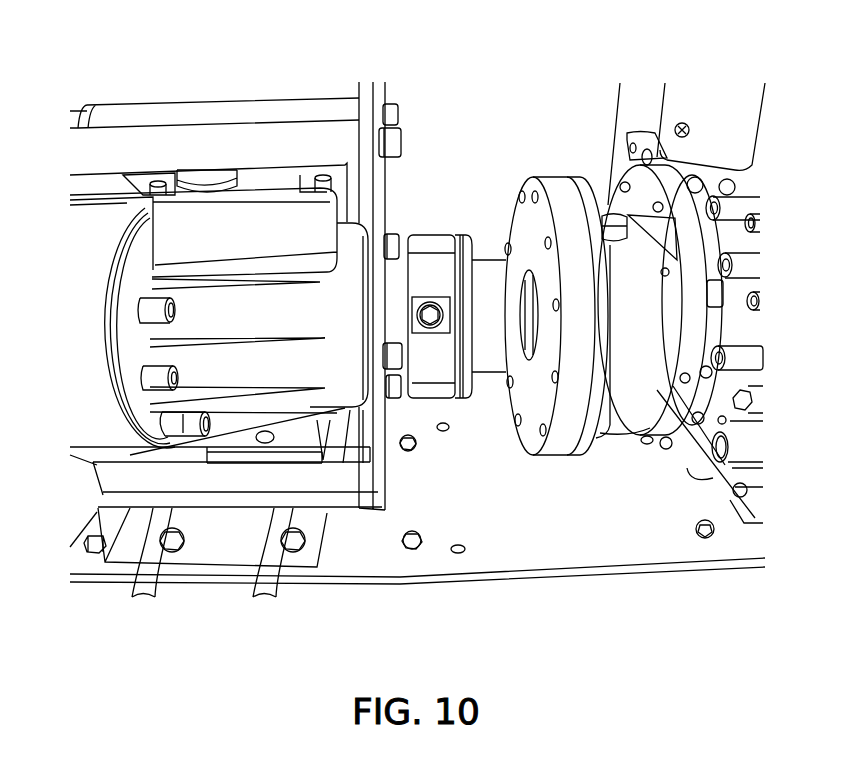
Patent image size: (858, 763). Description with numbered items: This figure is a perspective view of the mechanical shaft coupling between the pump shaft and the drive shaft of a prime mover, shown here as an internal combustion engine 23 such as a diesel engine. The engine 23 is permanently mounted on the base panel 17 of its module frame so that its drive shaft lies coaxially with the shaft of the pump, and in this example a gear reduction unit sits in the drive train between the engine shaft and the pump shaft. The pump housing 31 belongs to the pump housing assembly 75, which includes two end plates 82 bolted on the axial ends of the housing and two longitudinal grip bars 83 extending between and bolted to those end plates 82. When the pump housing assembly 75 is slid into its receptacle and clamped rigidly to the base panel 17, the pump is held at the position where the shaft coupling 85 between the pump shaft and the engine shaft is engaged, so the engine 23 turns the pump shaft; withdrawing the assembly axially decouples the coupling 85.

The base panel 17 is at (545, 523).
The internal combustion engine 23 is at (750, 264).
The pump housing 31 is at (160, 262).
The pump housing assembly 75 is at (98, 443).
The end plate 82 is at (385, 103).
The longitudinal grip bar 83 is at (160, 118).
The shaft coupling 85 is at (432, 262).